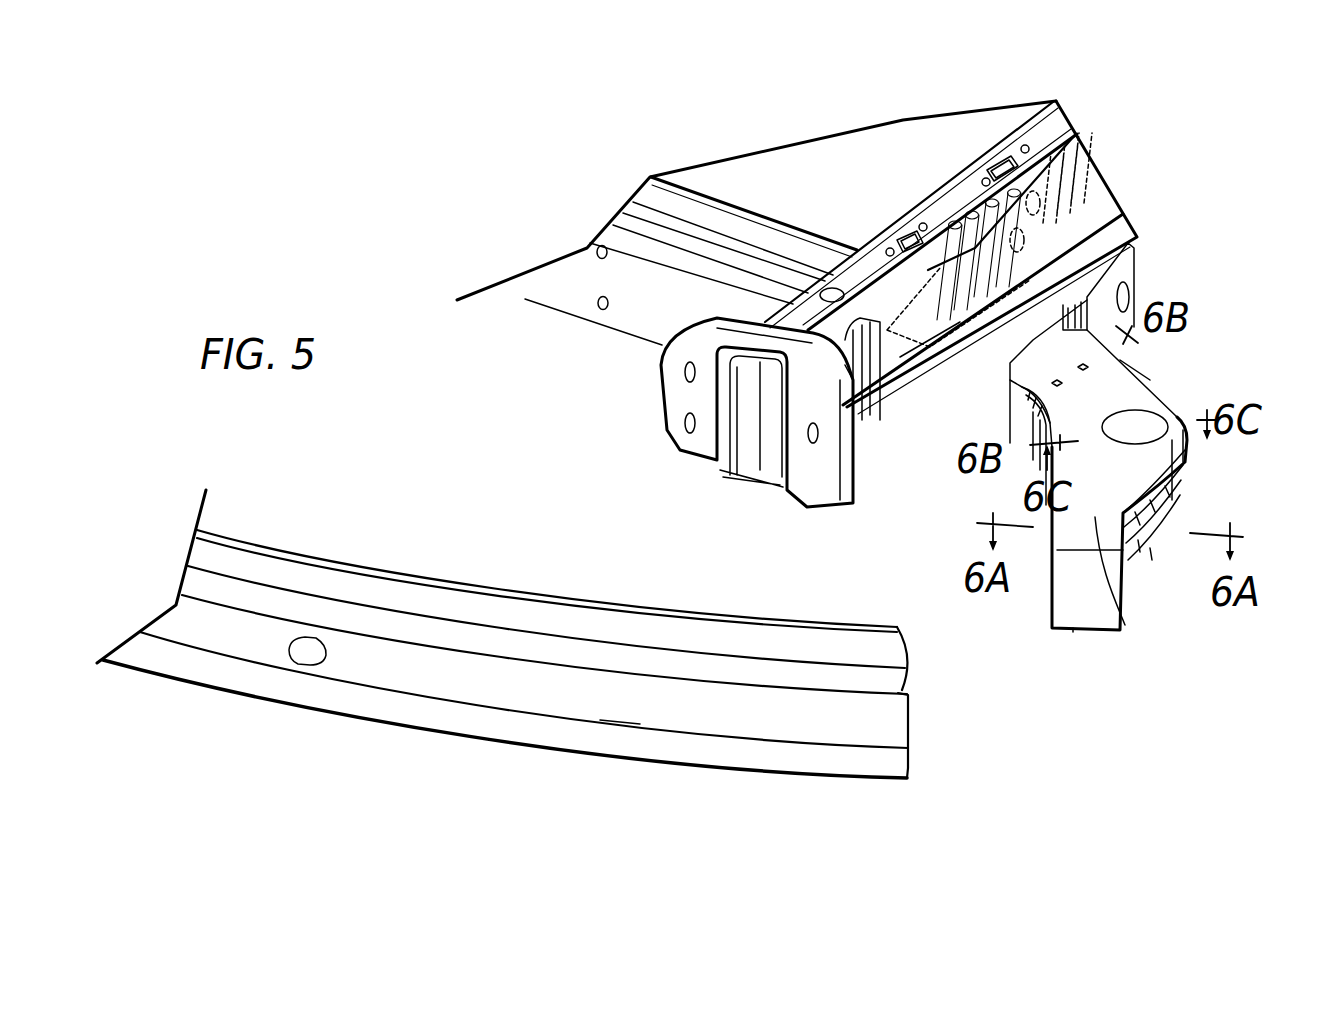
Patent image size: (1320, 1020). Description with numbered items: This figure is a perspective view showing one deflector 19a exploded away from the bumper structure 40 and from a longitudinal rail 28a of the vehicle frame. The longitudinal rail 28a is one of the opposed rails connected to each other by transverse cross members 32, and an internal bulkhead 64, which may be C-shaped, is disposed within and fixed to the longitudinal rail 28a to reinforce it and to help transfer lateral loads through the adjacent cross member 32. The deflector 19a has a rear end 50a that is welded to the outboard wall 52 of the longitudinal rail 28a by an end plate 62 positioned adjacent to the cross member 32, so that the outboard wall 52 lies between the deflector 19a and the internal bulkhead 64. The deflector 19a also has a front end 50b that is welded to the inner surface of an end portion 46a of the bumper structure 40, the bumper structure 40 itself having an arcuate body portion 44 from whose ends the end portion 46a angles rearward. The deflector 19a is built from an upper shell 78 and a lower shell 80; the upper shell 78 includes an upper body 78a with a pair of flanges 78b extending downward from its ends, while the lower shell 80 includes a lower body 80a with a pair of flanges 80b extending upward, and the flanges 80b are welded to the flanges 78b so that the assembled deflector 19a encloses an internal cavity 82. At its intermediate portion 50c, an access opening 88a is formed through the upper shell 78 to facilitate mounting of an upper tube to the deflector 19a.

The cross member 32 is at (747, 257).
The internal bulkhead 64 is at (980, 263).
The end plate 62 is at (1107, 273).
The rear end 50a is at (1135, 286).
The deflector 19a is at (1147, 363).
The upper shell 78 is at (1145, 465).
The access opening 88a is at (1157, 418).
The intermediate portion 50c is at (1190, 450).
The flange 78b is at (1190, 465).
The longitudinal rail 28a is at (938, 362).
The outboard wall 52 is at (898, 372).
The upper body 78a is at (1125, 530).
The internal cavity 82 is at (1092, 612).
The lower shell 80 is at (1150, 548).
The flange 80b is at (1050, 597).
The front end 50b is at (1053, 633).
The lower body 80a is at (1073, 630).
The bumper structure 40 is at (502, 655).
The body portion 44 is at (207, 640).
The end portion 46a is at (655, 705).